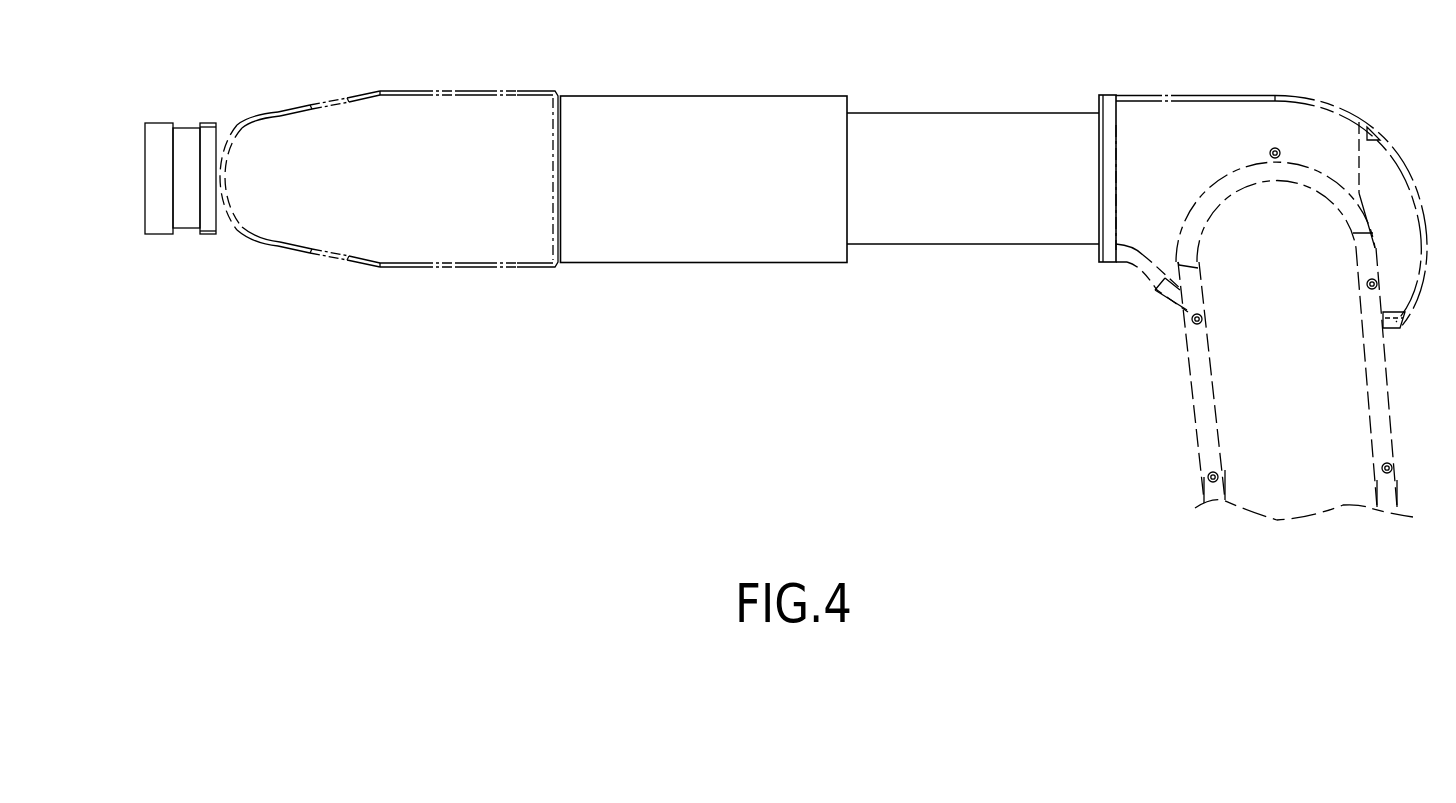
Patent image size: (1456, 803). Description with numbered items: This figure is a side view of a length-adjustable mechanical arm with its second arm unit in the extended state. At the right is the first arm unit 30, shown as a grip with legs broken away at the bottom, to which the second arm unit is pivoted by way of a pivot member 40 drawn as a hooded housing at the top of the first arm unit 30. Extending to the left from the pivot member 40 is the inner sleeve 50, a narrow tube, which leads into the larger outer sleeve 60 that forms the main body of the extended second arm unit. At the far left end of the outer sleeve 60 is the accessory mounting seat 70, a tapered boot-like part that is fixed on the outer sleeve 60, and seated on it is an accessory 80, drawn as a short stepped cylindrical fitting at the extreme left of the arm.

The first arm unit 30 is at (1180, 448).
The pivot member 40 is at (1242, 117).
The inner sleeve 50 is at (978, 127).
The outer sleeve 60 is at (667, 98).
The accessory mounting seat 70 is at (460, 108).
The accessory 80 is at (197, 110).